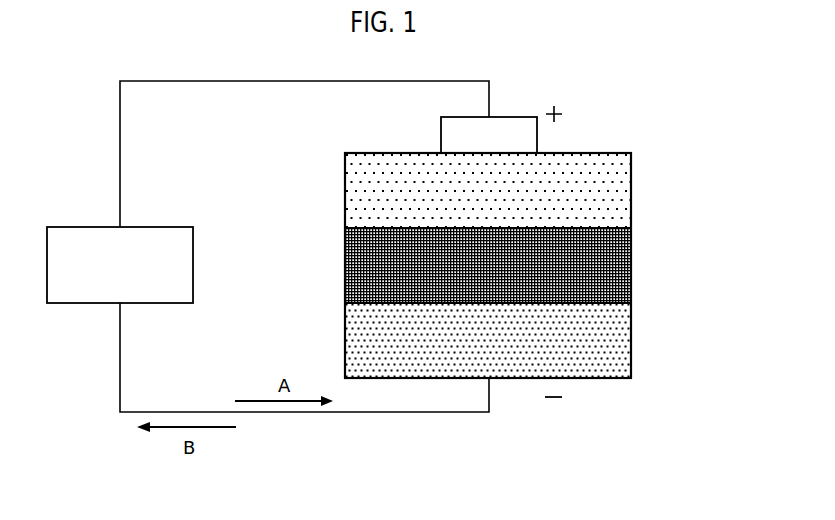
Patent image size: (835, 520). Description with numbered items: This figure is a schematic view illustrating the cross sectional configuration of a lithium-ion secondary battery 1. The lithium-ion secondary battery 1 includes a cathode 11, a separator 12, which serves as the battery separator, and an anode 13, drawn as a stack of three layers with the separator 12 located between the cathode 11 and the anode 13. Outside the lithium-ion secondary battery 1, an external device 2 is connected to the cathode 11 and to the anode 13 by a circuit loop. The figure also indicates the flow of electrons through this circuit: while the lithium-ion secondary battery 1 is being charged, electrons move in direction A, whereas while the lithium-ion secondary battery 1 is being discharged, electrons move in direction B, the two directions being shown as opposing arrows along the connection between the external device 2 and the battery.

The lithium-ion secondary battery 1 is at (673, 154).
The external device 2 is at (188, 268).
The cathode 11 is at (626, 193).
The separator 12 is at (626, 268).
The anode 13 is at (626, 343).